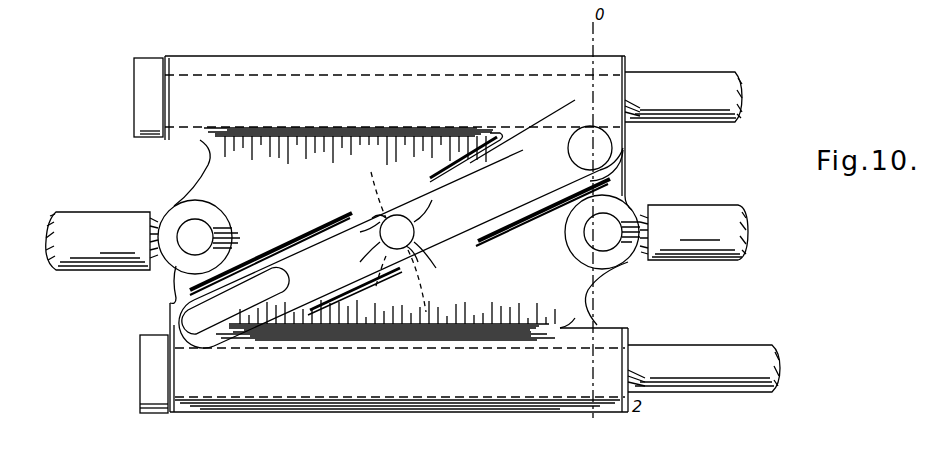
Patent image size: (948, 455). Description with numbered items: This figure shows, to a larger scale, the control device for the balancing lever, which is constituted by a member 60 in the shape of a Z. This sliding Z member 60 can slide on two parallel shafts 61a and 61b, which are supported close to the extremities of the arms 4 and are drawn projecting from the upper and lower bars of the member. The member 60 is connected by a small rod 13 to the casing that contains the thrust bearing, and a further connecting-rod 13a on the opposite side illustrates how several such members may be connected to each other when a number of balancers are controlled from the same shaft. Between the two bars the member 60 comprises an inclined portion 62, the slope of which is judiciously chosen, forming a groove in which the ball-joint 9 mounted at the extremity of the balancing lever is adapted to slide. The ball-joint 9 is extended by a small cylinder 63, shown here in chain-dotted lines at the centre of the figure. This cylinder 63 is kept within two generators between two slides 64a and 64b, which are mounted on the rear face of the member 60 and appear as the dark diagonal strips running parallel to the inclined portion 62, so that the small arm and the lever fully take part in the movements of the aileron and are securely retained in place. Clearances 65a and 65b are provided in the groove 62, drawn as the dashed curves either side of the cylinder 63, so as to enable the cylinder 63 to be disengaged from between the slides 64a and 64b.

The arms 4 is at (160, 72).
The ball-joint 9 is at (612, 148).
The small rod 13 is at (712, 214).
The connecting-rod 13a is at (92, 235).
The Z-shaped member 60 is at (562, 298).
The parallel shaft 61a is at (660, 82).
The parallel shaft 61b is at (718, 356).
The inclined portion 62 is at (520, 150).
The small cylinder 63 is at (414, 242).
The slide 64a is at (480, 244).
The slide 64b is at (313, 223).
The clearance 65a is at (384, 220).
The clearance 65b is at (414, 252).